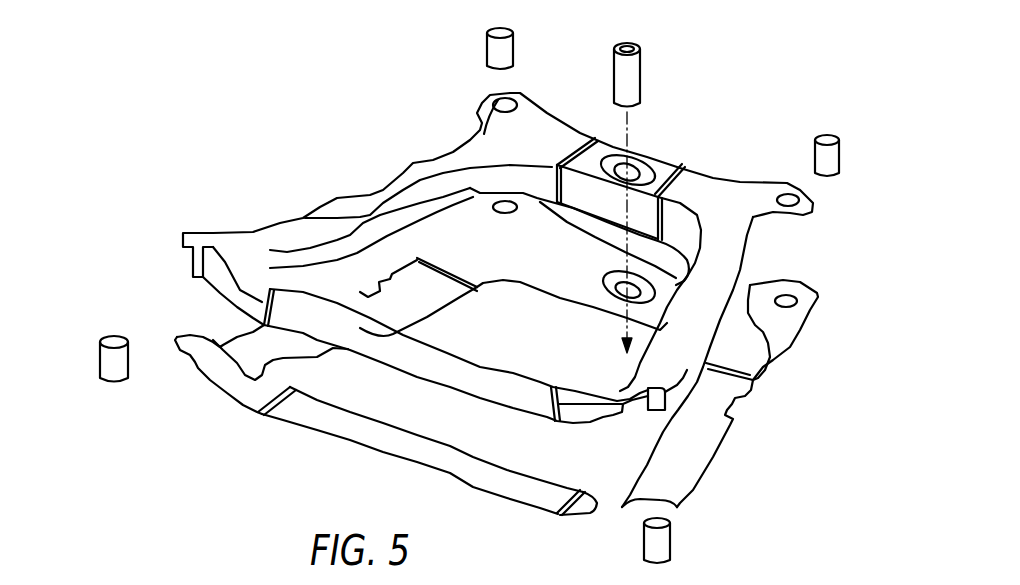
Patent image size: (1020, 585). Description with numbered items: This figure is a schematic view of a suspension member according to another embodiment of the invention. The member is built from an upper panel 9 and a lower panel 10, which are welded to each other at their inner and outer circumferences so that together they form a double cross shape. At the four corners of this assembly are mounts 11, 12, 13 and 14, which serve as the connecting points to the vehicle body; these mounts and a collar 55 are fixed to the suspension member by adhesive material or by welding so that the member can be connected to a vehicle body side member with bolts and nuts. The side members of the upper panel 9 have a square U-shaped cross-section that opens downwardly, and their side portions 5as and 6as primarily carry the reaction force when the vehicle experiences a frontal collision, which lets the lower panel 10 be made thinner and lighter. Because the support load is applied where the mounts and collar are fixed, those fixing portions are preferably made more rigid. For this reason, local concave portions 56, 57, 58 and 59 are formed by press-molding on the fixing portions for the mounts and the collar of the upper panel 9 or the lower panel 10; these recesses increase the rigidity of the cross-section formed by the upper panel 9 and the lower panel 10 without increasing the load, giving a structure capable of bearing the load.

The upper panel 9 is at (665, 160).
The lower panel 10 is at (803, 282).
The mount 11 is at (108, 340).
The mount 12 is at (647, 543).
The mount 13 is at (490, 50).
The mount 14 is at (830, 133).
The collar 55 is at (641, 62).
The local concave portion 56 is at (640, 162).
The local concave portion 57 is at (612, 298).
The local concave portion 58 is at (213, 362).
The local concave portion 59 is at (592, 505).
The side portion 5as is at (387, 225).
The side portion 6as is at (723, 320).